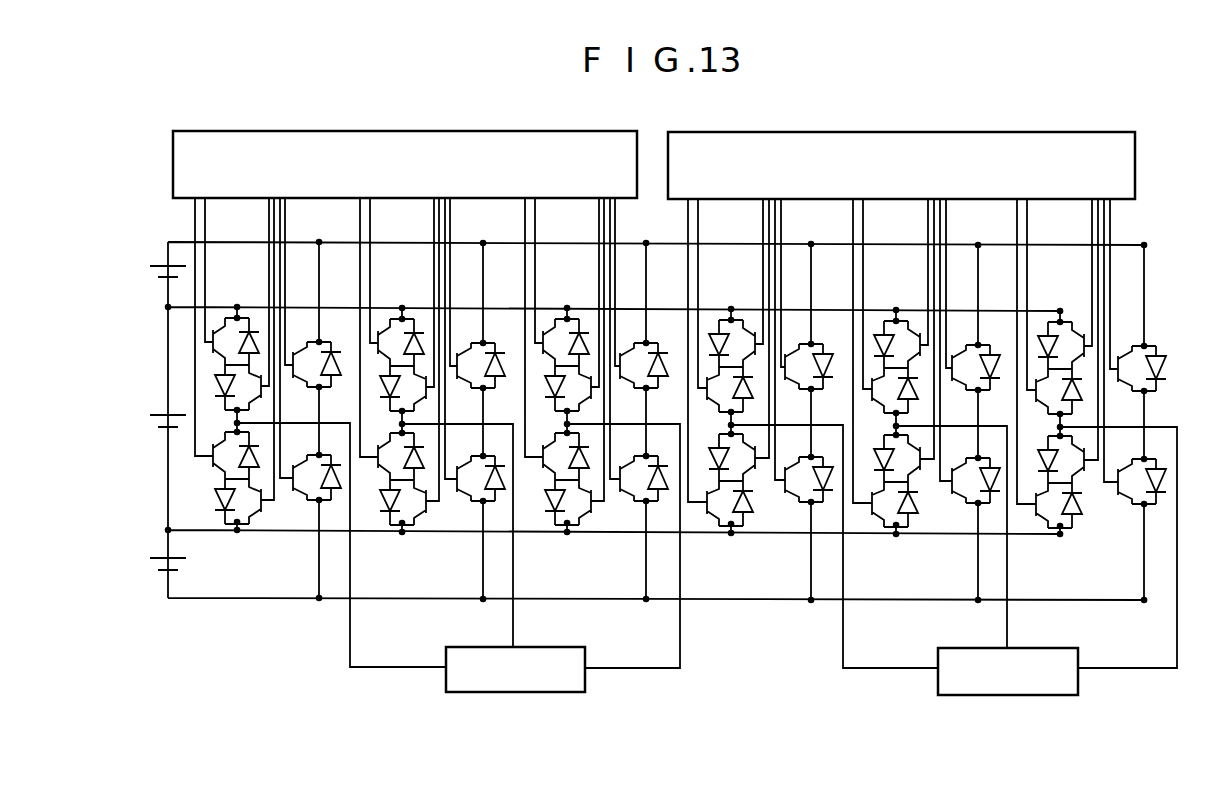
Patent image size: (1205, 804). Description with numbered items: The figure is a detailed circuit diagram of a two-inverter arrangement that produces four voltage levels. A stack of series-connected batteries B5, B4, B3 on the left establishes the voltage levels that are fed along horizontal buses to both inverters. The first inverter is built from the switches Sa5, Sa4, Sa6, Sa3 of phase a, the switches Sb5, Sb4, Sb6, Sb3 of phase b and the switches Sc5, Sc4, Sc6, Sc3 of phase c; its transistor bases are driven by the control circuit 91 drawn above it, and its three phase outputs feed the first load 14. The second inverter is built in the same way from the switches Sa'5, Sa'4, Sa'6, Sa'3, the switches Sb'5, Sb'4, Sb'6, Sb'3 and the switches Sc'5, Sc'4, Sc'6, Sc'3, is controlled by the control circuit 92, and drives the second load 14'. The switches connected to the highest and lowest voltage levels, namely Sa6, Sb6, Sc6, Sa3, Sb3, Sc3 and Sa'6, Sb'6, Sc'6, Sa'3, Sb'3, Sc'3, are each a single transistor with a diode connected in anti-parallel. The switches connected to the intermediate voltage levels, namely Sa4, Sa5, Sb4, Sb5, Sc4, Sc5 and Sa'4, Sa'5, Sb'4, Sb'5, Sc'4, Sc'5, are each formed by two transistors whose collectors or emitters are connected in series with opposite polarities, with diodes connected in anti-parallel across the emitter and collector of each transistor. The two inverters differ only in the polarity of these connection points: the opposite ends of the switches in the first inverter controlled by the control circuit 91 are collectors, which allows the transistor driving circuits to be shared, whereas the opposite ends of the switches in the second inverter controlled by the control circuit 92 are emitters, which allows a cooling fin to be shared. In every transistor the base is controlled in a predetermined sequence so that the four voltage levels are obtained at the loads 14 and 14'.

The control circuit 91 is at (468, 131).
The control circuit 92 is at (906, 132).
The first load 14 is at (515, 687).
The second load 14' is at (1008, 688).
The battery B5 is at (153, 272).
The battery B4 is at (153, 424).
The battery B3 is at (153, 565).
The switch Sa5 is at (236, 345).
The switch Sa4 is at (237, 499).
The switch Sa6 is at (327, 333).
The switch Sa3 is at (306, 511).
The switch Sb5 is at (402, 346).
The switch Sb4 is at (401, 500).
The switch Sb6 is at (492, 334).
The switch Sb3 is at (471, 512).
The switch Sc5 is at (567, 346).
The switch Sc4 is at (565, 500).
The switch Sc6 is at (655, 334).
The switch Sc3 is at (633, 512).
The switch Sa'5 is at (731, 346).
The switch Sa'4 is at (726, 501).
The switch Sa'6 is at (821, 335).
The switch Sa'3 is at (796, 513).
The switch Sb'5 is at (896, 347).
The switch Sb'4 is at (891, 502).
The switch Sb'6 is at (989, 336).
The switch Sb'3 is at (962, 514).
The switch Sc'5 is at (1060, 348).
The switch Sc'4 is at (1058, 503).
The switch Sc'6 is at (1155, 337).
The switch Sc'3 is at (1132, 515).